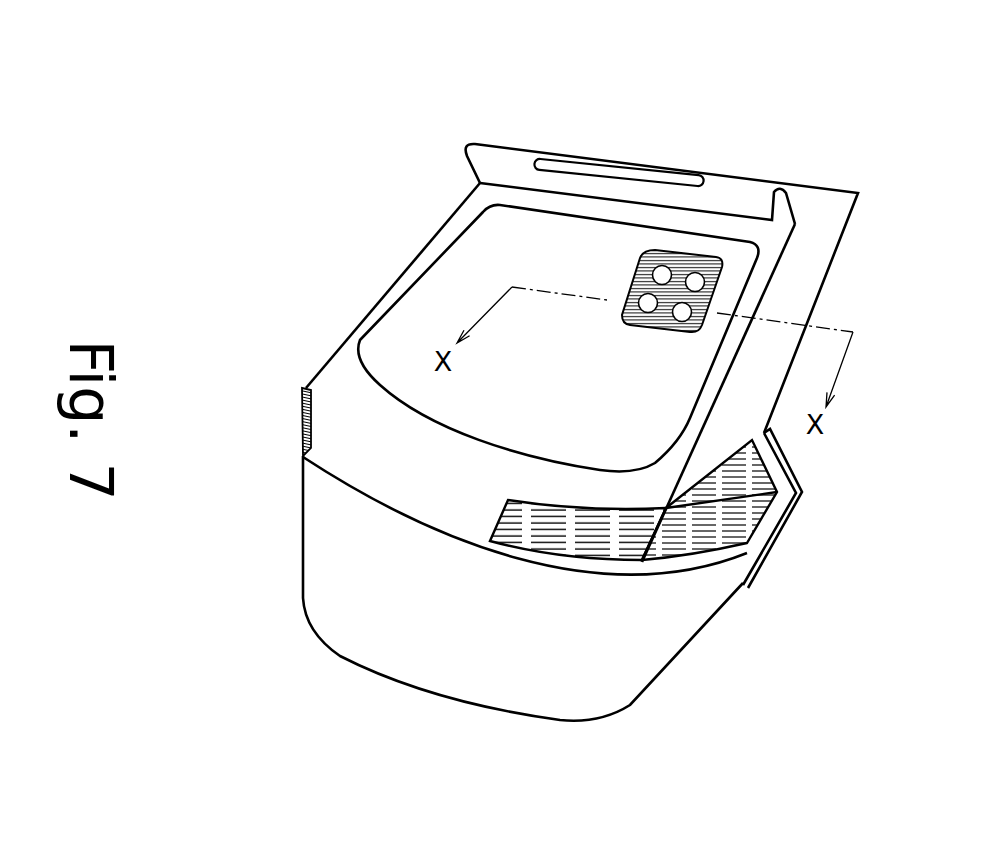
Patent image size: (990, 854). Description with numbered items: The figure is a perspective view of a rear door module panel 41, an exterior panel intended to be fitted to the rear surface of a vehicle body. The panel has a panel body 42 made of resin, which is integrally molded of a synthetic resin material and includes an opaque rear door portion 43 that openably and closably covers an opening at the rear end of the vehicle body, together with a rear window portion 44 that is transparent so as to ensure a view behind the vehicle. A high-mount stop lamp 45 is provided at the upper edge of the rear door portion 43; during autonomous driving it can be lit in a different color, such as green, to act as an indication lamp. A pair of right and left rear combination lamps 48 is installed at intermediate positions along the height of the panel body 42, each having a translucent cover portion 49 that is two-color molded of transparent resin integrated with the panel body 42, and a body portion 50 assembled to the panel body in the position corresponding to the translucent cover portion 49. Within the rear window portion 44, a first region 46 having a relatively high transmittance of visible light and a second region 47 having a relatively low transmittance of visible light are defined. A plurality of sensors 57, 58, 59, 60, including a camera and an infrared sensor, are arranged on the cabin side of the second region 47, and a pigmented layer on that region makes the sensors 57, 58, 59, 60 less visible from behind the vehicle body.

The rear door module panel 41 is at (386, 178).
The panel body 42 is at (845, 238).
The rear door portion 43 is at (323, 558).
The rear window portion 44 is at (420, 420).
The high-mount stop lamp 45 is at (594, 170).
The first region 46 is at (415, 302).
The second region 47 is at (649, 301).
The rear combination lamp 48 is at (300, 423).
The translucent cover portion 49 is at (582, 549).
The body portion 50 is at (763, 547).
The sensor 57 is at (652, 270).
The sensor 58 is at (697, 258).
The sensor 59 is at (639, 305).
The sensor 60 is at (681, 322).